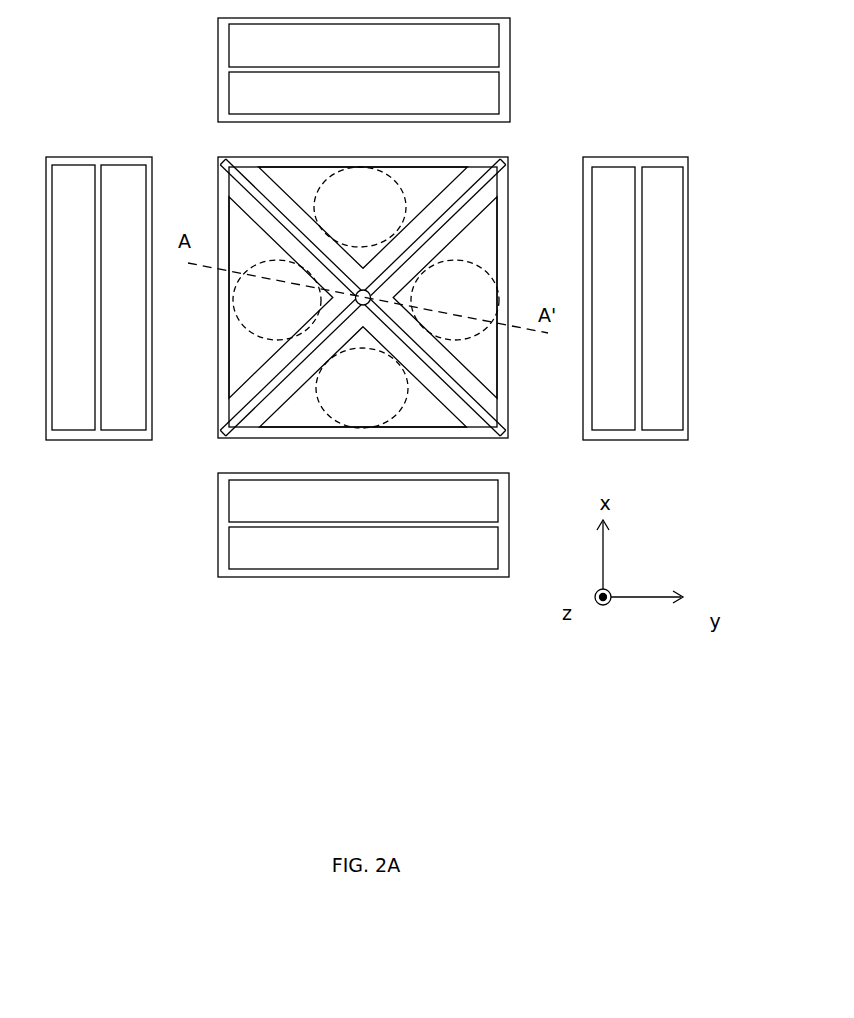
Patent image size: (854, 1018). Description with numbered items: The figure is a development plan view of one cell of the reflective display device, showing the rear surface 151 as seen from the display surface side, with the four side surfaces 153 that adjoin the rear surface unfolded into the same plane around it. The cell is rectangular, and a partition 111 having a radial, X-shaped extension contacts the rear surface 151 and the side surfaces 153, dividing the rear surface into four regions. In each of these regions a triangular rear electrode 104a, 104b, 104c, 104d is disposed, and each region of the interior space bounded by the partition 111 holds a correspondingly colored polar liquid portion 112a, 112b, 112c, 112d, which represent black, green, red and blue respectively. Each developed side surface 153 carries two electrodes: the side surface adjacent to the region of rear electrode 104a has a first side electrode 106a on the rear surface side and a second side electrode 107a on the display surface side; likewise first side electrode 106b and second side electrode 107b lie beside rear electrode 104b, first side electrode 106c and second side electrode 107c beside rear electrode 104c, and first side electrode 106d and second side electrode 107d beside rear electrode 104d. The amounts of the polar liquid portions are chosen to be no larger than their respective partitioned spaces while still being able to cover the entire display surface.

The second side electrode 107d is at (364, 45).
The first side electrode 106d is at (364, 93).
The second side electrode 107a is at (73, 297).
The first side electrode 106a is at (123, 297).
The side surface 153 is at (636, 157).
The first side electrode 106b is at (613, 298).
The second side electrode 107b is at (662, 298).
The first side electrode 106c is at (363, 501).
The second side electrode 107c is at (363, 548).
The rear surface 151 is at (219, 189).
The partition 111 is at (505, 160).
The polar liquid portion 112d is at (362, 169).
The polar liquid portion 112c is at (360, 429).
The polar liquid portion 112a is at (243, 333).
The polar liquid portion 112b is at (487, 318).
The rear electrode 104d is at (360, 207).
The rear electrode 104a is at (277, 300).
The rear electrode 104b is at (455, 300).
The rear electrode 104c is at (362, 388).